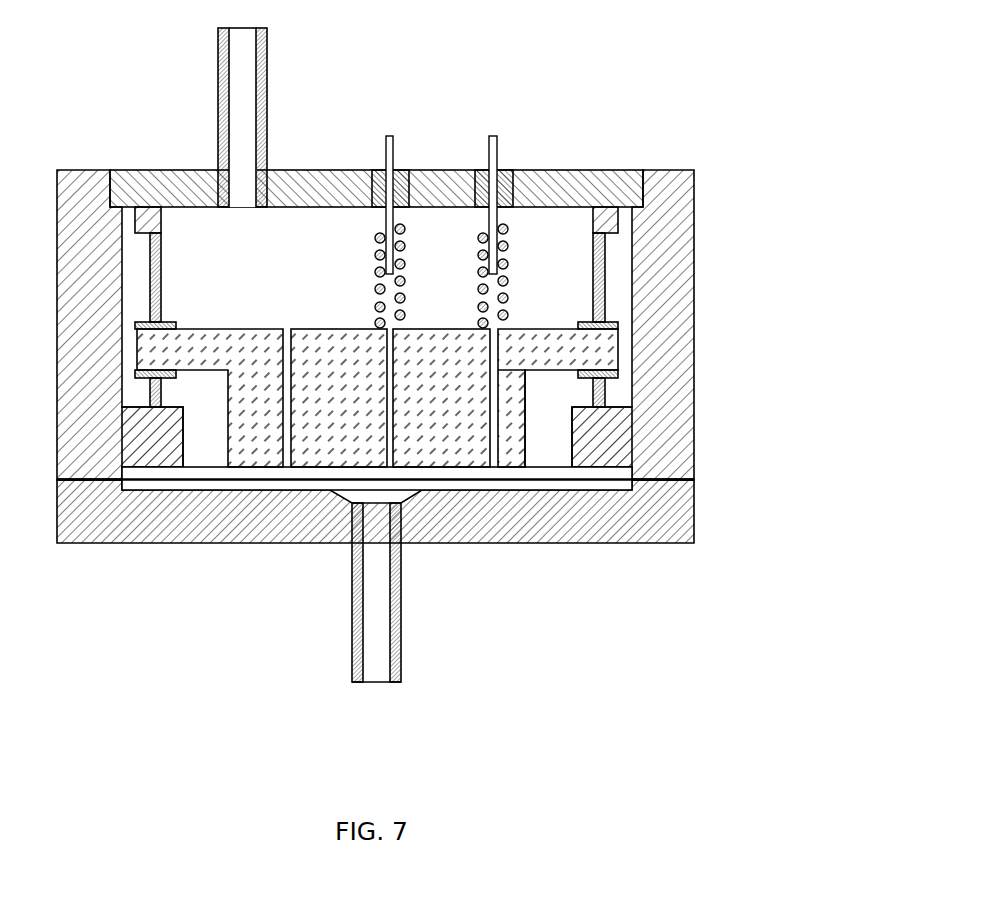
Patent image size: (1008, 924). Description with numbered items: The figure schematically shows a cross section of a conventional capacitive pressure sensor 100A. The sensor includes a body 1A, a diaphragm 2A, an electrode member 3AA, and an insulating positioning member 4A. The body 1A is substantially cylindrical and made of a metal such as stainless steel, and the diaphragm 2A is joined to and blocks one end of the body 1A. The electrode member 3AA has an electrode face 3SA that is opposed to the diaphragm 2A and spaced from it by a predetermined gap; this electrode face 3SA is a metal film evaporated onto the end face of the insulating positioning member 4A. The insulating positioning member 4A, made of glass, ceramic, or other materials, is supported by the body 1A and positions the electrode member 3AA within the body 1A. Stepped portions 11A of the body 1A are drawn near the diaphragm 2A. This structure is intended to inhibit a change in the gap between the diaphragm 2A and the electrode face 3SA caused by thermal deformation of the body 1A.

The capacitive pressure sensor 100A is at (423, 354).
The body 1A is at (703, 332).
The support step of chamber 11A is at (146, 449).
The diaphragm 2A is at (291, 482).
The electrode face 3SA is at (456, 469).
The electrode member 3AA is at (467, 128).
The insulating positioning member 4A is at (525, 387).